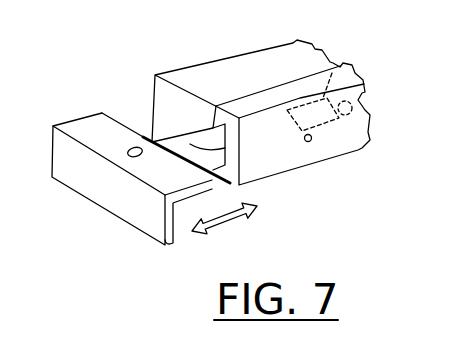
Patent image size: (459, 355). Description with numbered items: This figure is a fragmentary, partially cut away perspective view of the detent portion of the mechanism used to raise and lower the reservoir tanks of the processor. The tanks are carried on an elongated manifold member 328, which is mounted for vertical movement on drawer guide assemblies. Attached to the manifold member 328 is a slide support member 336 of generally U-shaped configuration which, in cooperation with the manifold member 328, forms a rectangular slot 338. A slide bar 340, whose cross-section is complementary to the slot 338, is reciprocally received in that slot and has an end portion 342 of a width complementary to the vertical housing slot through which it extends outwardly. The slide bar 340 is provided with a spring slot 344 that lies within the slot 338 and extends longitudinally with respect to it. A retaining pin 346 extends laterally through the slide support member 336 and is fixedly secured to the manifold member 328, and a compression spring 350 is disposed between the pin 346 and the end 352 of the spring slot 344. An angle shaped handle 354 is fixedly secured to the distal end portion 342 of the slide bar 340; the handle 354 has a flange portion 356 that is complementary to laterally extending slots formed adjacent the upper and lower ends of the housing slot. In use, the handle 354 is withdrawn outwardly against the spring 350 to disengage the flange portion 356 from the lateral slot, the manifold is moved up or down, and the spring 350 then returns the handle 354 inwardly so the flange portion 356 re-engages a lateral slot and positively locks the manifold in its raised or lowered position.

The manifold member 328 is at (256, 89).
The slide support member 336 is at (279, 162).
The rectangular slot 338 is at (190, 145).
The slide bar 340 is at (204, 132).
The end portion 342 is at (115, 155).
The spring slot 344 is at (323, 123).
The retaining pin 346 is at (309, 142).
The compression spring 350 is at (332, 73).
The end of slot 352 is at (356, 104).
The handle 354 is at (94, 183).
The flange portion 356 is at (107, 128).